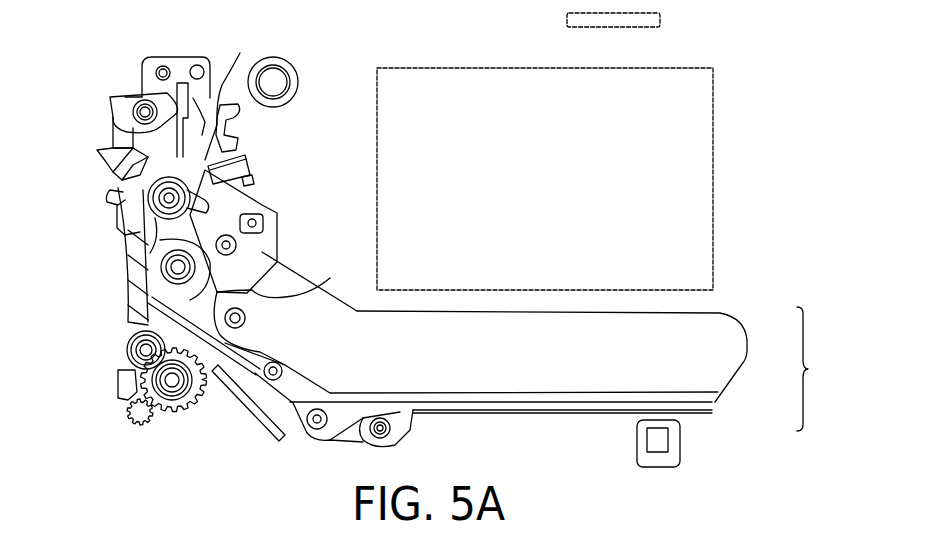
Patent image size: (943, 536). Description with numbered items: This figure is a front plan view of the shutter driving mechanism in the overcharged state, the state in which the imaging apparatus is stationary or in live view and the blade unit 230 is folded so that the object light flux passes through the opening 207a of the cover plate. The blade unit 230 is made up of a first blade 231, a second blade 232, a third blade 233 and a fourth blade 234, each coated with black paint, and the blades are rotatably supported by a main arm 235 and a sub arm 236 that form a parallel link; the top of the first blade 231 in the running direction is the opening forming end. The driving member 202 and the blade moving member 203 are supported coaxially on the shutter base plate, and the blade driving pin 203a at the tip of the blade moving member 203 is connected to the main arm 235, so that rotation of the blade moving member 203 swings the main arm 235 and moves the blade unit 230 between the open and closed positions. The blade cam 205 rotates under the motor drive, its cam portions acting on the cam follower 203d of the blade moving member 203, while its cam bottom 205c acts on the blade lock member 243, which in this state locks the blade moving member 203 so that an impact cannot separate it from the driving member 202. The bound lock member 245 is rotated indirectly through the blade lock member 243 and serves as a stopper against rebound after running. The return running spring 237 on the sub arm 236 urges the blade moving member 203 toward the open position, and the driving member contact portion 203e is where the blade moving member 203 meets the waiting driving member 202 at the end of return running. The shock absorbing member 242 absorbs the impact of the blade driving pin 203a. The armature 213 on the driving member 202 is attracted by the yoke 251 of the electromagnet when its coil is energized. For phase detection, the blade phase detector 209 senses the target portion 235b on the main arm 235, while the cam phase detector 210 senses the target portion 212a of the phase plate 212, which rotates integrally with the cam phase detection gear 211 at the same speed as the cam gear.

The driving member 202 is at (228, 137).
The blade moving member 203 is at (185, 150).
The blade driving pin 203a is at (265, 222).
The cam follower 203d is at (128, 240).
The driving member contact portion 203e is at (208, 96).
The blade cam 205 is at (128, 295).
The cam bottom 205c is at (130, 272).
The opening 207a is at (460, 68).
The blade phase detector 209 is at (107, 193).
The cam phase detector 210 is at (118, 377).
The cam phase detection gear 211 is at (156, 420).
The phase plate 212 is at (140, 398).
The target portion 212a is at (140, 424).
The armature 213 is at (247, 155).
The blade unit 230 is at (825, 369).
The first blade 231 is at (708, 410).
The second blade 232 is at (720, 402).
The third blade 233 is at (720, 392).
The fourth blade 234 is at (730, 369).
The main arm 235 is at (278, 240).
The target portion 235b is at (97, 150).
The sub arm 236 is at (283, 405).
The return running spring 237 is at (293, 308).
The shock absorbing member 242 is at (269, 69).
The blade lock member 243 is at (127, 325).
The bound lock member 245 is at (110, 97).
The yoke 251 is at (250, 181).